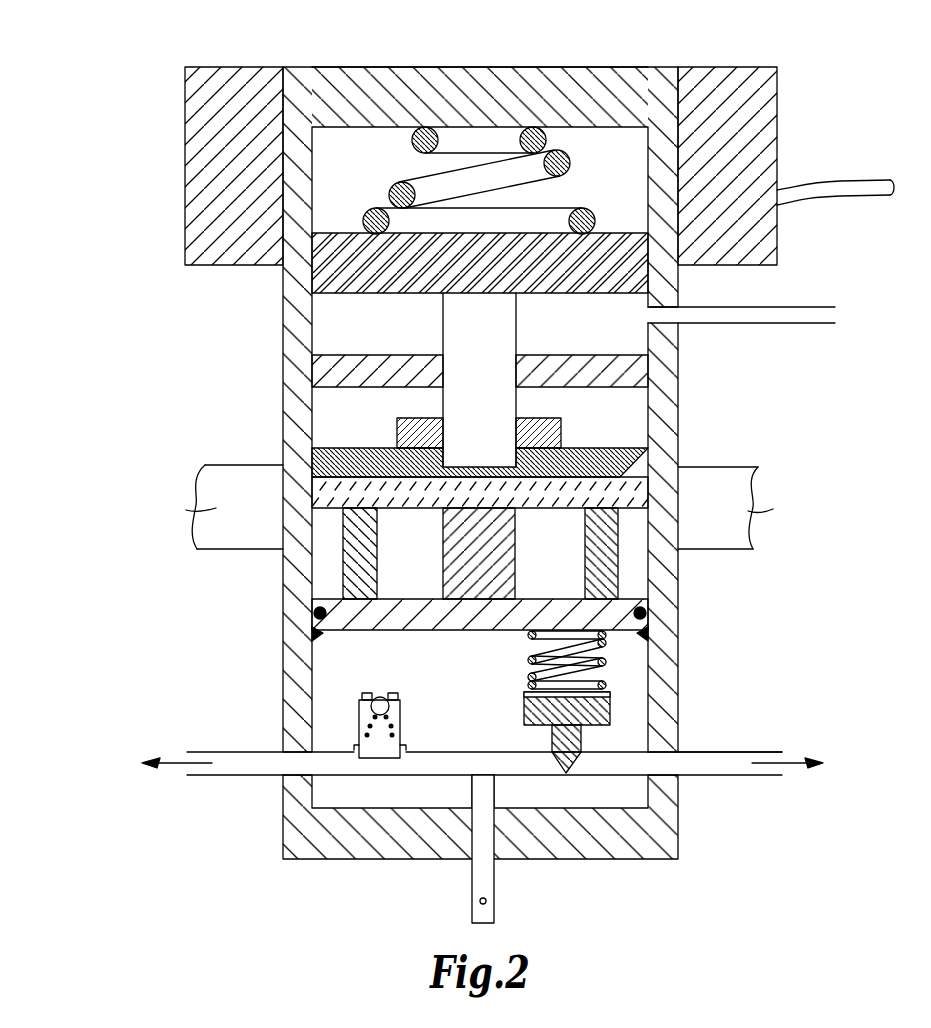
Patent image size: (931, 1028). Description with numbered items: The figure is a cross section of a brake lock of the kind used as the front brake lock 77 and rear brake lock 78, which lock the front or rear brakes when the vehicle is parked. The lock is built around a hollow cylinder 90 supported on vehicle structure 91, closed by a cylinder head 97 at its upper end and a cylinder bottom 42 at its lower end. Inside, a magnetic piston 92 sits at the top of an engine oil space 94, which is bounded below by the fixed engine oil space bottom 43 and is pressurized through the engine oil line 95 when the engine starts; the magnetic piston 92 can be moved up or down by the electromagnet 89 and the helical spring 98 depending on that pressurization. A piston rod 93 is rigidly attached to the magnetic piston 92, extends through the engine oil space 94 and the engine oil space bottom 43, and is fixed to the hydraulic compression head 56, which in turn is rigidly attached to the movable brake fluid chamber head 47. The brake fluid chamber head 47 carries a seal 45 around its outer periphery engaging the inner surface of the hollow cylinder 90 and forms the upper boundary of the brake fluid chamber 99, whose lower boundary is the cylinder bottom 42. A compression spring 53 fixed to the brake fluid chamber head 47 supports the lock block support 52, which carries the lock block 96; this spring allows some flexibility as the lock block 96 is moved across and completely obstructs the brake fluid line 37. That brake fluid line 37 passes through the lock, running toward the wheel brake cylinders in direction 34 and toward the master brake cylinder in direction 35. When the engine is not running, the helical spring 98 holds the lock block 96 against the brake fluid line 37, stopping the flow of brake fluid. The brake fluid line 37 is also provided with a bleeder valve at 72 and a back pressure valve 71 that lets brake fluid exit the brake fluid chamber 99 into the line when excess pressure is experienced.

The direction toward wheel brake cylinders 34 is at (173, 763).
The direction toward master brake cylinder 35 is at (790, 768).
The brake fluid line 37 is at (693, 768).
The cylinder bottom 42 is at (330, 845).
The engine oil space bottom 43 is at (623, 370).
The seal 45 is at (312, 613).
The brake fluid chamber head 47 is at (372, 622).
The lock block support 52 is at (611, 712).
The compression spring 53 is at (607, 648).
The hydraulic compression head 56 is at (620, 470).
The back pressure valve 71 is at (358, 718).
The bleeder valve 72 is at (487, 901).
The front brake lock 77 is at (154, 198).
The rear brake lock 78 is at (234, 166).
The electromagnet 89 is at (760, 122).
The hollow cylinder 90 is at (283, 347).
The vehicle structure 91 is at (215, 508).
The magnetic piston 92 is at (622, 272).
The piston rod 93 is at (505, 402).
The engine oil space 94 is at (589, 331).
The engine oil line 95 is at (820, 313).
The lock block 96 is at (575, 766).
The cylinder head 97 is at (343, 83).
The helical spring 98 is at (467, 140).
The brake fluid chamber 99 is at (471, 692).